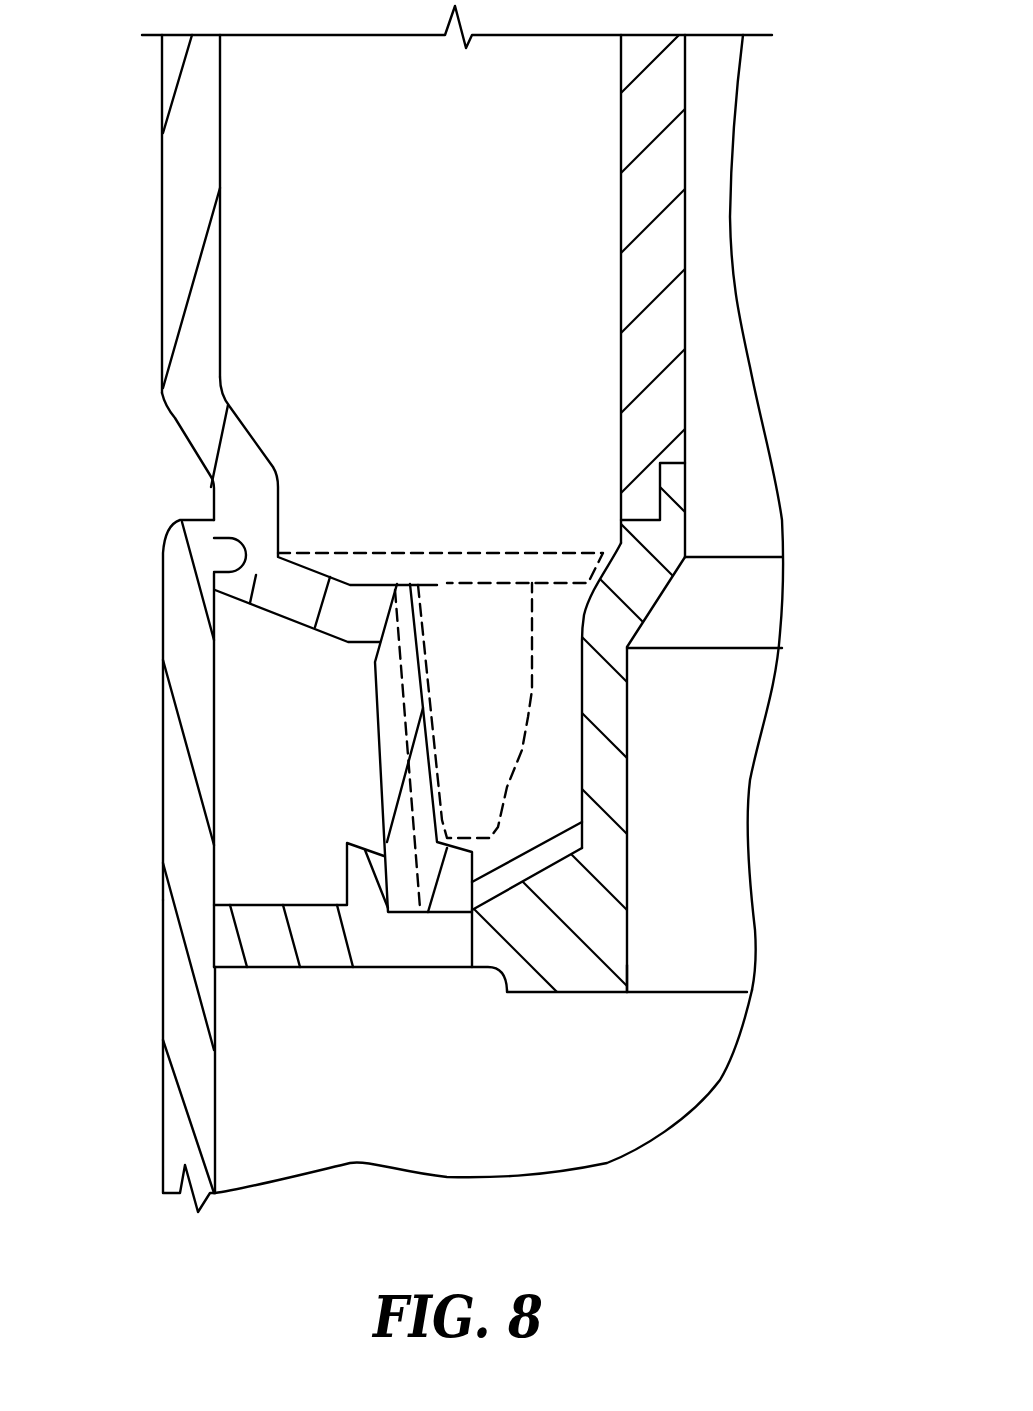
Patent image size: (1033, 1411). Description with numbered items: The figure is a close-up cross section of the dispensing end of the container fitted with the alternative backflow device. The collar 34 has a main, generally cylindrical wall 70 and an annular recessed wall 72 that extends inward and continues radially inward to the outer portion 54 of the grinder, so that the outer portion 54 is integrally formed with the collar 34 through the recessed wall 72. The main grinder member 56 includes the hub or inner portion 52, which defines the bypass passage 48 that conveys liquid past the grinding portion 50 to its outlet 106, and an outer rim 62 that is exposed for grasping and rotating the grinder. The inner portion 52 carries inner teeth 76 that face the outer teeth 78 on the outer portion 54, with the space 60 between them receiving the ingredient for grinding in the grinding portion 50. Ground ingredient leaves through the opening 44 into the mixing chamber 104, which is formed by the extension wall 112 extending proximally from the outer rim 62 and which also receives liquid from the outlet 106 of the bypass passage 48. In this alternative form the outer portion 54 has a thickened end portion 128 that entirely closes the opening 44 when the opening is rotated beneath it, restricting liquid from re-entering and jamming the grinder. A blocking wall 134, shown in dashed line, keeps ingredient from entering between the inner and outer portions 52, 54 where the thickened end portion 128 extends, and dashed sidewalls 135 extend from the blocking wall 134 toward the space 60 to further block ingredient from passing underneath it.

The collar 34 is at (255, 118).
The main cylindrical wall 70 is at (162, 230).
The recessed wall 72 is at (197, 430).
The main grinder member 56 is at (183, 612).
The outer portion 54 is at (403, 708).
The outer teeth 78 is at (435, 807).
The outer rim 62 is at (172, 805).
The thickened end portion 128 is at (450, 887).
The mixing chamber 104 is at (215, 1088).
The extension wall 112 is at (172, 1127).
The opening 44 is at (393, 957).
The bypass passage 48 is at (627, 923).
The outlet of the bypass passage 106 is at (627, 965).
The inner portion (hub) 52 is at (732, 878).
The inner teeth 76 is at (488, 823).
The space 60 is at (470, 828).
The grinding portion 50 is at (573, 534).
The blocking wall 134 is at (437, 553).
The sidewalls 135 is at (473, 620).